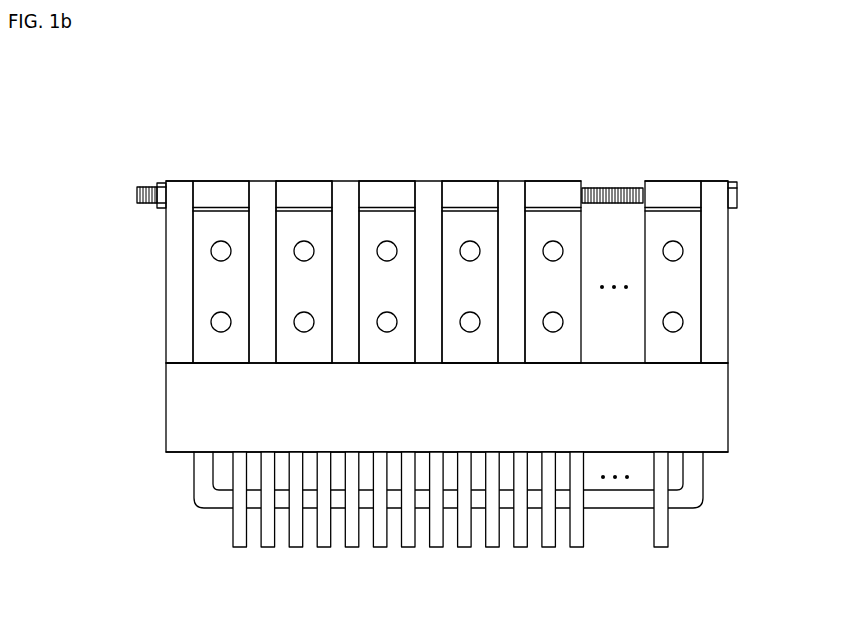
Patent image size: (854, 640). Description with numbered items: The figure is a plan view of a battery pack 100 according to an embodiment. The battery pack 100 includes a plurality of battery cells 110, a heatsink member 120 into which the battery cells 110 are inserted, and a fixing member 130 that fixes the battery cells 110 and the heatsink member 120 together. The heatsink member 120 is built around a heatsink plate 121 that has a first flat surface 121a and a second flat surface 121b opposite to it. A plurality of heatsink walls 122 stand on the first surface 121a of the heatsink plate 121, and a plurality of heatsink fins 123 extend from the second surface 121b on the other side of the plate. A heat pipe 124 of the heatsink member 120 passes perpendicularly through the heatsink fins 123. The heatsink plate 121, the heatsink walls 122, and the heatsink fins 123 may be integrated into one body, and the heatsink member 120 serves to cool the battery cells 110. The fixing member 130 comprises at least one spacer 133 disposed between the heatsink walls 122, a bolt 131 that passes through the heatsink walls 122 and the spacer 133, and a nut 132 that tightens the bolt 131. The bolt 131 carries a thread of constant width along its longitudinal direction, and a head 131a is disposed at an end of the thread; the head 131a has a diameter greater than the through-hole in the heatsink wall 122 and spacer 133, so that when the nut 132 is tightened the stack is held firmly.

The battery pack 100 is at (127, 97).
The battery cell 110 is at (206, 228).
The heatsink member 120 is at (85, 277).
The heatsink plate 121 is at (170, 408).
The first surface 121a is at (183, 362).
The second surface 121b is at (183, 453).
The heatsink wall 122 is at (175, 285).
The heatsink fin 123 is at (233, 533).
The heat pipe 124 is at (194, 488).
The fixing member 130 is at (678, 135).
The bolt 131 is at (602, 187).
The head 131a is at (732, 181).
The nut 132 is at (162, 181).
The spacer 133 is at (393, 187).